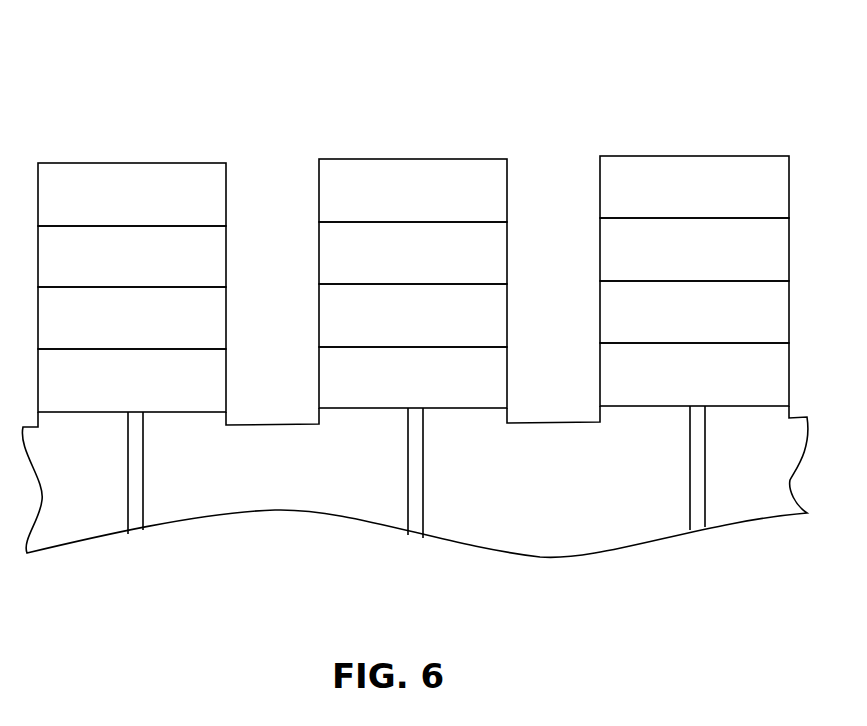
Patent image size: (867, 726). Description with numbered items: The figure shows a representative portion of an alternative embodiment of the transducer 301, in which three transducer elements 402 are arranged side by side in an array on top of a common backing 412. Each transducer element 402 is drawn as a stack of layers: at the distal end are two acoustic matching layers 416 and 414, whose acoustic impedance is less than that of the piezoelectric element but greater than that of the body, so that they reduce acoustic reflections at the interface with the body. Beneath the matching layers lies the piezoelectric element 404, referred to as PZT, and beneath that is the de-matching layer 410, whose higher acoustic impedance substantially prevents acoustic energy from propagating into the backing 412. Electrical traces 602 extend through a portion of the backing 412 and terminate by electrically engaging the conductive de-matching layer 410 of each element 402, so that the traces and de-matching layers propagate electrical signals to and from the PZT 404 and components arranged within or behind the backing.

The transducer 301 is at (92, 70).
The transducer element 402 is at (133, 145).
The matching layer 416 is at (192, 215).
The matching layer 414 is at (192, 278).
The piezoelectric element 404 is at (113, 339).
The de-matching layer 410 is at (192, 403).
The backing 412 is at (255, 490).
The electrical trace 602 is at (144, 493).